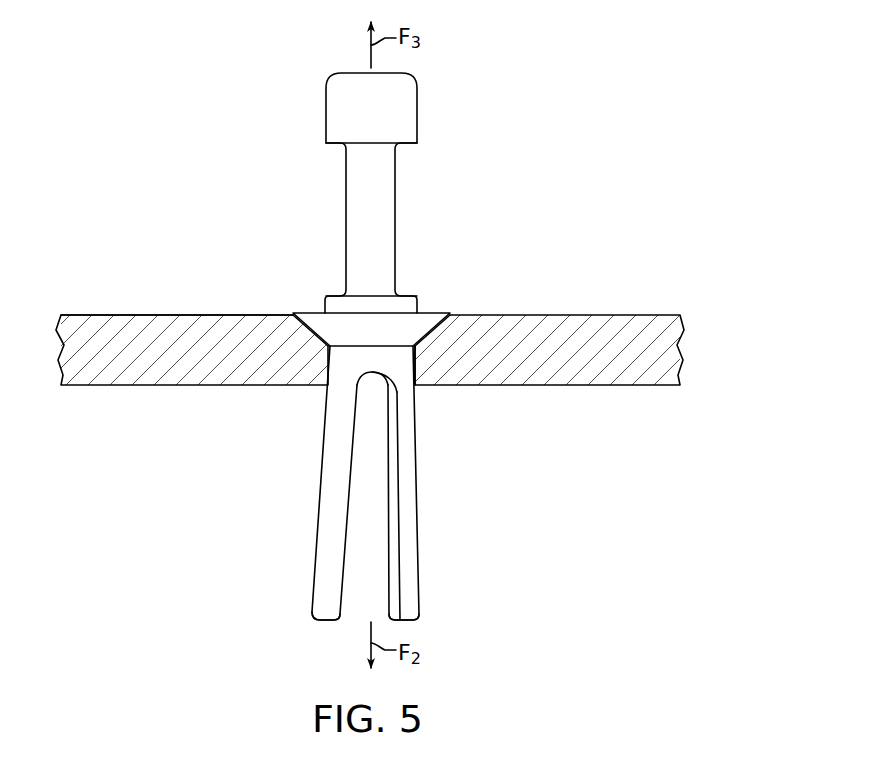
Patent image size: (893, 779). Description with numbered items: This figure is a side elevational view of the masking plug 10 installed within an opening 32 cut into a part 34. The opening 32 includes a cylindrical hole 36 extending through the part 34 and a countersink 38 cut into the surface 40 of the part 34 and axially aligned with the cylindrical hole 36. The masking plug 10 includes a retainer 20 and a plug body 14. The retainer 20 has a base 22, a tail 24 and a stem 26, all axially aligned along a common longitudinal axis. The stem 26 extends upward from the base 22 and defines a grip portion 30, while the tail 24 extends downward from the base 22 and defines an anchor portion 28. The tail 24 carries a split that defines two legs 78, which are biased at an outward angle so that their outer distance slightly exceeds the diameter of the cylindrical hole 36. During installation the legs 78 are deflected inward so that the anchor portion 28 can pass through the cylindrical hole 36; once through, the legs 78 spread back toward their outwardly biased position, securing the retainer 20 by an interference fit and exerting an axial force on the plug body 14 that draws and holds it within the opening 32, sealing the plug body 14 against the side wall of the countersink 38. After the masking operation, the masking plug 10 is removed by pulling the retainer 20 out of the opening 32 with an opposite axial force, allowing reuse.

The masking plug 10 is at (427, 336).
The plug body 14 is at (440, 312).
The insert 20 is at (396, 422).
The base 22 is at (406, 296).
The tail 24 is at (416, 455).
The stem 26 is at (396, 205).
The anchor portion 28 is at (438, 483).
The grip portion 30 is at (326, 198).
The opening 32 is at (312, 338).
The part 34 is at (156, 315).
The cylindrical hole 36 is at (414, 367).
The countersink 38 is at (452, 320).
The surface 40 is at (585, 315).
The legs 78 is at (313, 578).